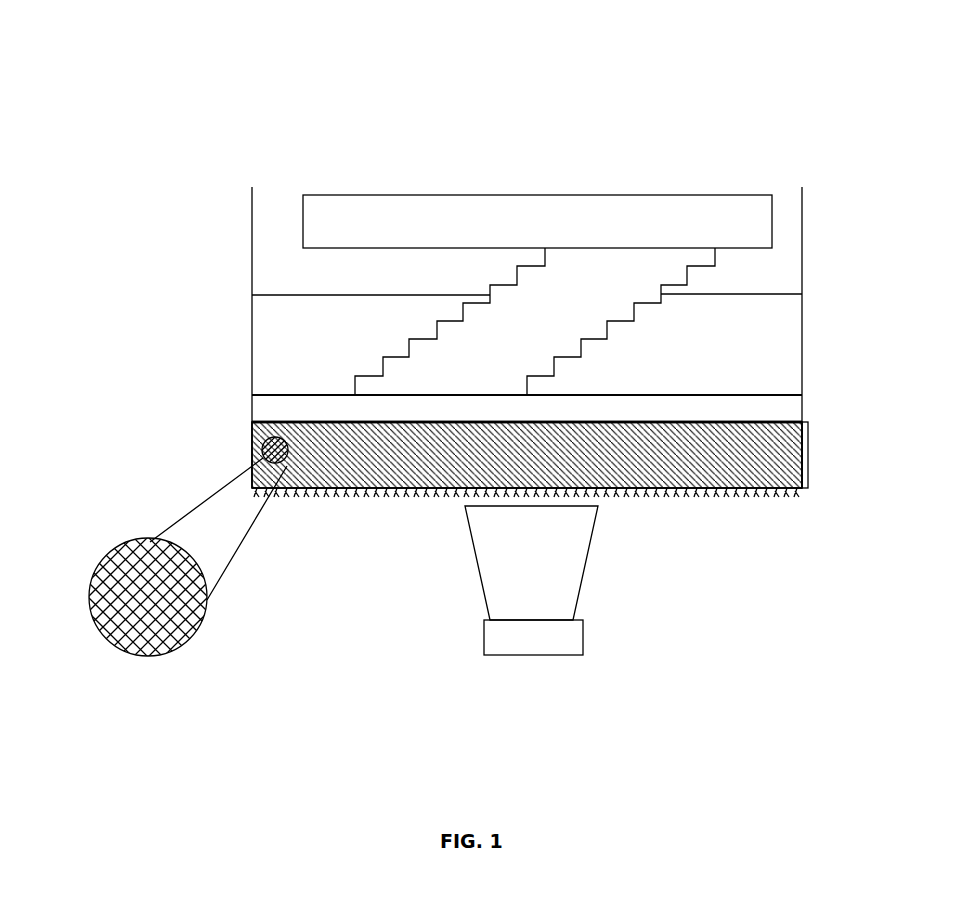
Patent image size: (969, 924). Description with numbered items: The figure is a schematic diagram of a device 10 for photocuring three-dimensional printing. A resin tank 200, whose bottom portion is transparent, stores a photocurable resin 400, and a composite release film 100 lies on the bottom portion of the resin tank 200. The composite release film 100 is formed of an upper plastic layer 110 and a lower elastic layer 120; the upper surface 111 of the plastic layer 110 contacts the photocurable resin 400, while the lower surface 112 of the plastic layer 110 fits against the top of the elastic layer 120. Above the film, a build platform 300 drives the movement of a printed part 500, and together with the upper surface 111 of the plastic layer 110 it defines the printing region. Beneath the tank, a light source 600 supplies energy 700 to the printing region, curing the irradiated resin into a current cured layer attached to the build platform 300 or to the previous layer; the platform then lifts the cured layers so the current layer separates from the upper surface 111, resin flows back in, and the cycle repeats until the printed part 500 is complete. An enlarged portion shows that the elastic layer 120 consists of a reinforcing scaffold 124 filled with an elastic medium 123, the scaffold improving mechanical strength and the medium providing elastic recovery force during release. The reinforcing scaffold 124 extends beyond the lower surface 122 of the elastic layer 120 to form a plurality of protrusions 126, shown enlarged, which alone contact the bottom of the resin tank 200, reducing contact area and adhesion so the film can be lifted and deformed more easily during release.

The device for photocuring 3D printing 10 is at (783, 91).
The composite release film 100 is at (808, 442).
The plastic layer 110 is at (252, 410).
The upper surface of the plastic layer 111 is at (770, 393).
The lower surface of the plastic layer 112 is at (773, 422).
The elastic layer 120 is at (252, 457).
The lower surface of the elastic layer 122 is at (790, 487).
The elastic medium 123 is at (103, 593).
The reinforcing scaffold 124 is at (123, 550).
The protrusions 126 is at (380, 490).
The resin tank 200 is at (802, 299).
The build platform 300 is at (528, 215).
The photocurable resin 400 is at (347, 338).
The 3D printed part 500 is at (610, 277).
The light source 600 is at (598, 635).
The energy 700 is at (560, 555).